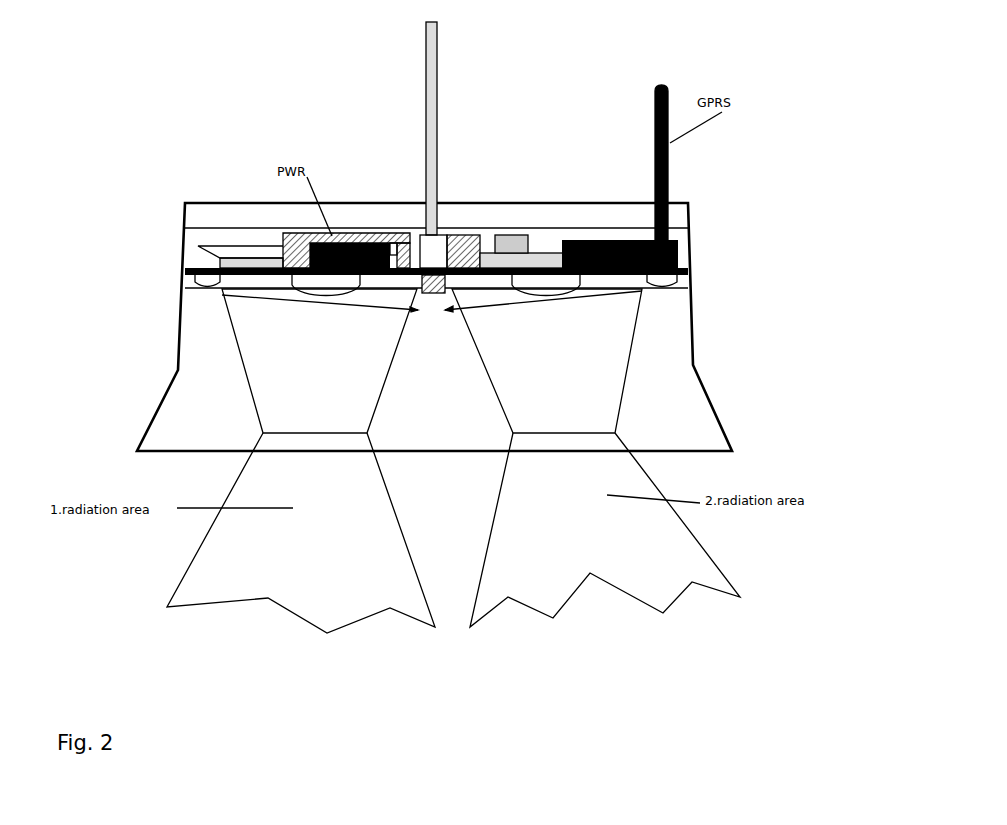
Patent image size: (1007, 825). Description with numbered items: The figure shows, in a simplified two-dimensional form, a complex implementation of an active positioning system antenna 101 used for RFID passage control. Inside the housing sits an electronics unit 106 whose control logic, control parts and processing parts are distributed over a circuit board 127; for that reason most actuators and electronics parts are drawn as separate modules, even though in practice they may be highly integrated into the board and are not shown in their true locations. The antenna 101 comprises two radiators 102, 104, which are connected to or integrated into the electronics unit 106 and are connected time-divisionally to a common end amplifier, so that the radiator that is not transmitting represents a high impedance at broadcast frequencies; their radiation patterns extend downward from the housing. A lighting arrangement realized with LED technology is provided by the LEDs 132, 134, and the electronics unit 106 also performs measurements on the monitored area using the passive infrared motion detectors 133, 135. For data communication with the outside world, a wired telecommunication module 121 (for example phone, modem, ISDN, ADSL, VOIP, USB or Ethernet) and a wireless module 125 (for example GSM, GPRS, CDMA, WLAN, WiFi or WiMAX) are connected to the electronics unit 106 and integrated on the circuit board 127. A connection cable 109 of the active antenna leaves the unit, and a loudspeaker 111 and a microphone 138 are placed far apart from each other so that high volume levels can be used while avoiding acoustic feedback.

The active positioning system antenna 101 is at (185, 203).
The electronics unit 106 is at (232, 240).
The loudspeaker 111 is at (202, 237).
The circuit board 127 is at (183, 268).
The connection cable 109 is at (437, 58).
The wired communications module 121 is at (511, 240).
The wireless communication module 125 is at (677, 245).
The LED 132 is at (183, 292).
The LED 134 is at (678, 279).
The passive infrared motion detector 133 is at (303, 298).
The passive infrared motion detector 135 is at (568, 293).
The microphone 138 is at (570, 295).
The radiator 102 is at (275, 387).
The radiator 104 is at (583, 398).